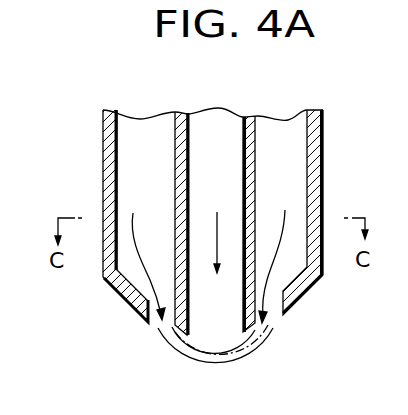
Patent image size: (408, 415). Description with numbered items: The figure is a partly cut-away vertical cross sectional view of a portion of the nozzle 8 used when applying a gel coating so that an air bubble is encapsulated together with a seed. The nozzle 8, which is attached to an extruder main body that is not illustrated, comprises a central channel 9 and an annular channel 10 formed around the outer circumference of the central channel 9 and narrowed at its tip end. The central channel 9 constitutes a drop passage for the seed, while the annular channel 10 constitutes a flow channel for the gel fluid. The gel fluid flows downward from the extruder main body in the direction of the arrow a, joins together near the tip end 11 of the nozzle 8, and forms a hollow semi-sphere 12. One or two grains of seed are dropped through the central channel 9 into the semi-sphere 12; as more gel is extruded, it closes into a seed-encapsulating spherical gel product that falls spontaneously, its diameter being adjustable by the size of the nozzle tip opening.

The nozzle 8 is at (328, 184).
The central channel 9 is at (212, 123).
The annular channel 10 is at (137, 132).
The tip end 11 is at (213, 323).
The hollow semi-sphere 12 is at (195, 362).